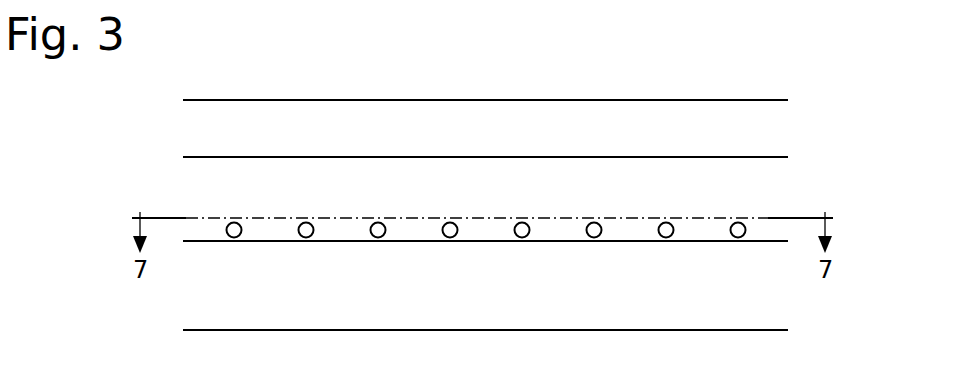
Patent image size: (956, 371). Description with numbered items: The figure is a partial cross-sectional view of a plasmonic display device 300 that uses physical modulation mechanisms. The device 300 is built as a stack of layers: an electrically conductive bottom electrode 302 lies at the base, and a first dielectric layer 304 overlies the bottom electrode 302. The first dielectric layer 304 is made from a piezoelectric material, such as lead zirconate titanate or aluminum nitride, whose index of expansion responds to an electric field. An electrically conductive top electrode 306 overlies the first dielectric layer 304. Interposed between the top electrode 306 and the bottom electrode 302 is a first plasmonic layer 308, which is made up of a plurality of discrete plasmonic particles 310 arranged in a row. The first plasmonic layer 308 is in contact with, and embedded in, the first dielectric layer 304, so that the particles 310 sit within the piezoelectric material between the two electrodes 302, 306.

The device 300 is at (773, 67).
The bottom electrode 302 is at (485, 285).
The first dielectric layer 304 is at (485, 199).
The top electrode 306 is at (485, 128).
The first plasmonic layer 308 is at (204, 229).
The plasmonic particles 310 is at (297, 231).